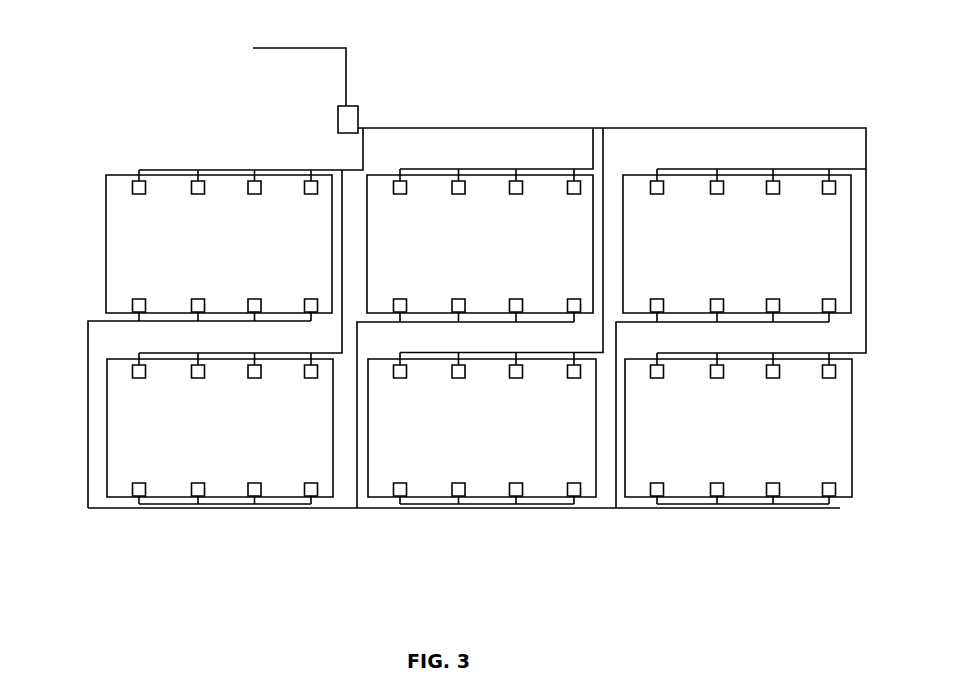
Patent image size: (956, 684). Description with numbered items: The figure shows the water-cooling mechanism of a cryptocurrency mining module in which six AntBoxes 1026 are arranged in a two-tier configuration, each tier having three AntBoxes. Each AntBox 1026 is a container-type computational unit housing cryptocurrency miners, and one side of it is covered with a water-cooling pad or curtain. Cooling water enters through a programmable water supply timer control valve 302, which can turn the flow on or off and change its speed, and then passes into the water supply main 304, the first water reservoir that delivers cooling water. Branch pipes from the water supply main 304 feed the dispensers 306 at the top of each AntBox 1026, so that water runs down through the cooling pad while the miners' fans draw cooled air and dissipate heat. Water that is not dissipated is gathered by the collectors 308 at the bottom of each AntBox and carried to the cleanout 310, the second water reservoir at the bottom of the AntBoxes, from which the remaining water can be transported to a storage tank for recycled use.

The programmable water supply timer control valve 302 is at (348, 115).
The water supply main 304 is at (633, 98).
The dispenser 306 is at (138, 183).
The collector 308 is at (135, 305).
The cleanout 310 is at (598, 508).
The AntBox 1026 is at (479, 336).